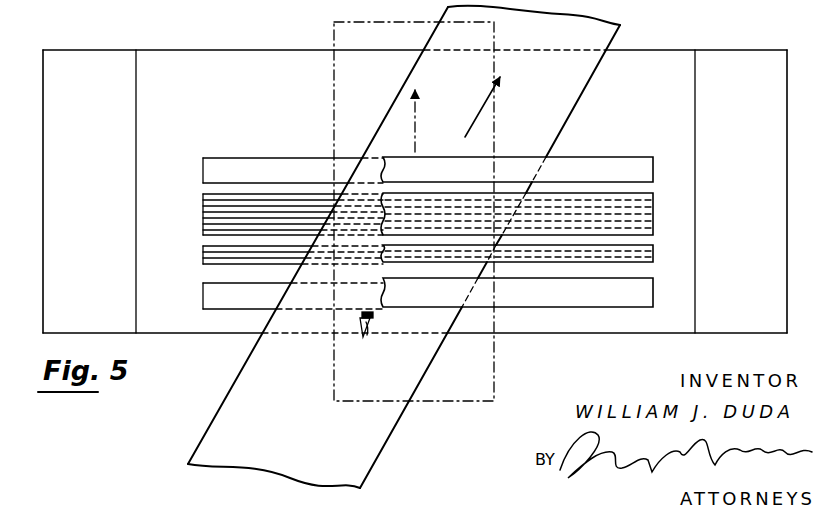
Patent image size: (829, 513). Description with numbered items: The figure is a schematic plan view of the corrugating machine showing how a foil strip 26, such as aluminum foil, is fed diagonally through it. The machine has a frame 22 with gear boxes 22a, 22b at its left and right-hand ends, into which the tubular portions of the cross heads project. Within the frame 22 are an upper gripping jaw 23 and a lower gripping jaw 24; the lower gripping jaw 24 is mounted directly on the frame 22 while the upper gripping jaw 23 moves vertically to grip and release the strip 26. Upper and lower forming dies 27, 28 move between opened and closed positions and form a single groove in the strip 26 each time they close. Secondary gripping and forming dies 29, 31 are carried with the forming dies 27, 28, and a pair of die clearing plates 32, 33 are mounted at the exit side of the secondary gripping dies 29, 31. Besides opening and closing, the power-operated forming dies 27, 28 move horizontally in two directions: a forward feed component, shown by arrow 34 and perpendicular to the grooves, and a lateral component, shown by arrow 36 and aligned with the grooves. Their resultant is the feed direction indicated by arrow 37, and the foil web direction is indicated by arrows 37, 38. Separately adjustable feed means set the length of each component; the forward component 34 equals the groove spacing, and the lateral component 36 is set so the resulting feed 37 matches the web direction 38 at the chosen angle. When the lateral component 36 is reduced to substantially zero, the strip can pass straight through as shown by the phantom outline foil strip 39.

The frame 22 is at (231, 47).
The gear box 22a is at (75, 72).
The gear box 22b is at (733, 61).
The upper gripping jaw 23 is at (598, 306).
The lower gripping jaw 24 is at (205, 295).
The strip 26 is at (220, 408).
The upper forming die 27 is at (654, 253).
The lower forming die 28 is at (203, 257).
The secondary gripping and forming die 29 is at (654, 211).
The secondary gripping and forming die 31 is at (203, 215).
The die clearing plate 32 is at (618, 158).
The die clearing plate 33 is at (203, 167).
The forward feed direction arrow 34 is at (362, 320).
The lateral feed component arrow 36 is at (362, 312).
The resulting feed direction arrow 37 is at (368, 332).
The web direction arrow 38 is at (477, 116).
The phantom outline foil strip 39 is at (497, 372).